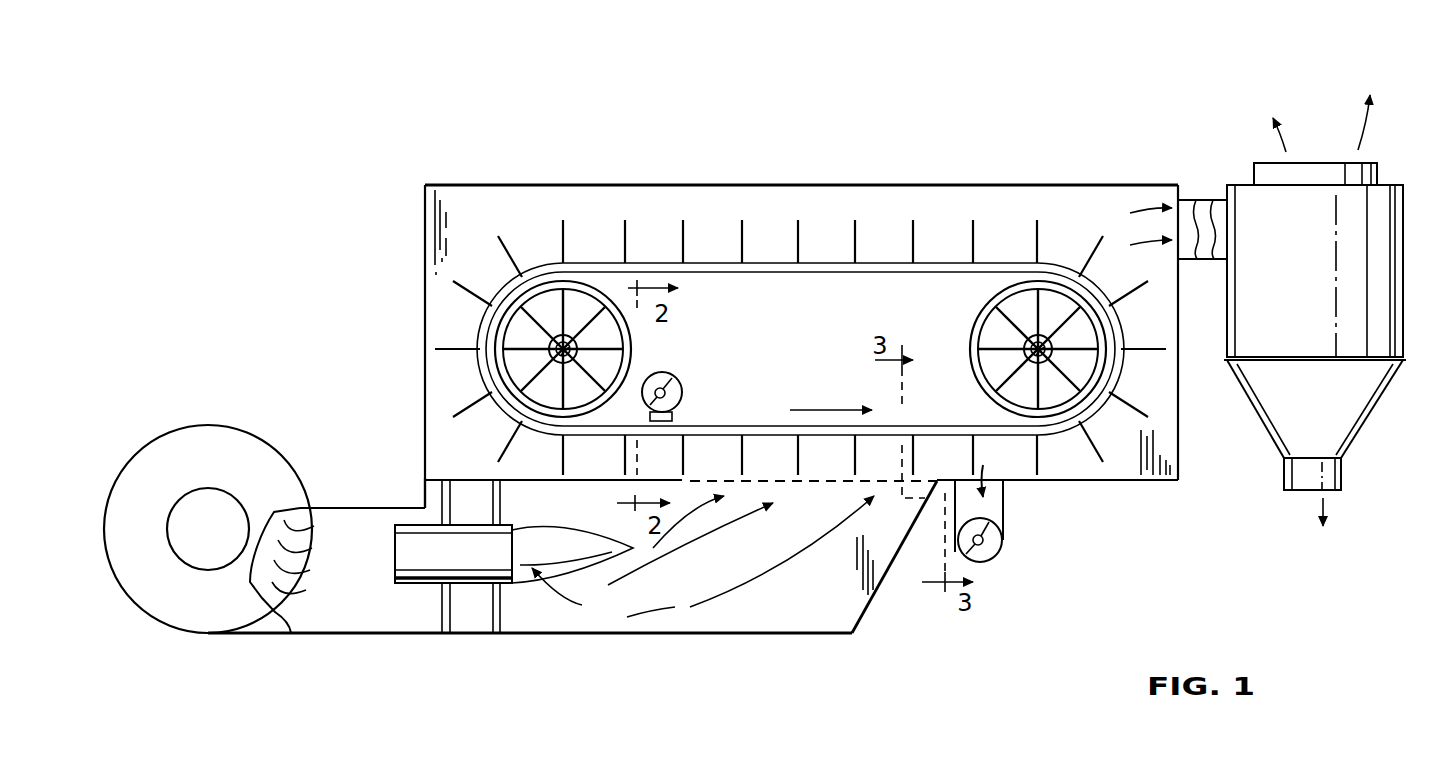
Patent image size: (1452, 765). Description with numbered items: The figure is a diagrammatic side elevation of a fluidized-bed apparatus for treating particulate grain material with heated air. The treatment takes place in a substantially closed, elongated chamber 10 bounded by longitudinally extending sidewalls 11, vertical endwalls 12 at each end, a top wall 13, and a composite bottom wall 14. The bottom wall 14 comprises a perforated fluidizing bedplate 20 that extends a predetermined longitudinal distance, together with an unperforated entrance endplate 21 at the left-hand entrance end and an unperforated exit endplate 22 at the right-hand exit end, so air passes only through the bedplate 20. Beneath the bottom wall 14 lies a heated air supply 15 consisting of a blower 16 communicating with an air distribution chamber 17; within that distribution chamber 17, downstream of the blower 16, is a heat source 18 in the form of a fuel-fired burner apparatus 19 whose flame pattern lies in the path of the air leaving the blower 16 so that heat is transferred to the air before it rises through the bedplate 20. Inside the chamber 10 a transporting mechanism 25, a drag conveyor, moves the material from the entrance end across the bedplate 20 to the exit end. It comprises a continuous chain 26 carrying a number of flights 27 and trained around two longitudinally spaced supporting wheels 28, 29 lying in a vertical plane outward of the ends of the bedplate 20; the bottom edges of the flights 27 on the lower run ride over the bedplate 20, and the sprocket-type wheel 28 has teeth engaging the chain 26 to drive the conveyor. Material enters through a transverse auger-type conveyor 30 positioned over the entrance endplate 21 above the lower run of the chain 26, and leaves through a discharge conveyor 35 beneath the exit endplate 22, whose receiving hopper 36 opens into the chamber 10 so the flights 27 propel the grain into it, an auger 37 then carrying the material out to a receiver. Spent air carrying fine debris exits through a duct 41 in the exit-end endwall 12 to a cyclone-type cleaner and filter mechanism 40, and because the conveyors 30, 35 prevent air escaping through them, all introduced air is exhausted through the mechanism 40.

The chamber 10 is at (788, 324).
The sidewalls 11 is at (788, 351).
The endwalls 12 is at (427, 236).
The top wall 13 is at (893, 184).
The bottom wall 14 is at (1088, 486).
The heated air supply 15 is at (406, 637).
The blower 16 is at (193, 425).
The air distribution chamber 17 is at (737, 633).
The heat source 18 is at (467, 594).
The burner apparatus 19 is at (393, 582).
The bedplate 20 is at (767, 466).
The entrance endplate 21 is at (456, 471).
The exit endplate 22 is at (1133, 482).
The transporting mechanism 25 is at (800, 286).
The chain 26 is at (882, 262).
The flights 27 is at (690, 228).
The supporting wheel 28 is at (638, 357).
The supporting wheel 29 is at (972, 312).
The auger-type conveyor 30 is at (684, 386).
The discharge conveyor 35 is at (1011, 540).
The receiving hopper 36 is at (1003, 503).
The auger 37 is at (1002, 543).
The cleaner and filter mechanism 40 is at (1316, 154).
The duct 41 is at (1209, 200).